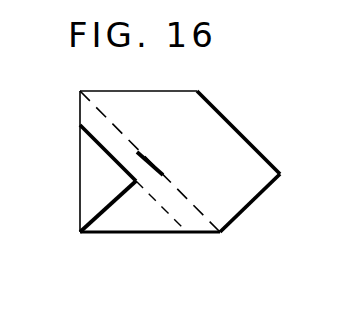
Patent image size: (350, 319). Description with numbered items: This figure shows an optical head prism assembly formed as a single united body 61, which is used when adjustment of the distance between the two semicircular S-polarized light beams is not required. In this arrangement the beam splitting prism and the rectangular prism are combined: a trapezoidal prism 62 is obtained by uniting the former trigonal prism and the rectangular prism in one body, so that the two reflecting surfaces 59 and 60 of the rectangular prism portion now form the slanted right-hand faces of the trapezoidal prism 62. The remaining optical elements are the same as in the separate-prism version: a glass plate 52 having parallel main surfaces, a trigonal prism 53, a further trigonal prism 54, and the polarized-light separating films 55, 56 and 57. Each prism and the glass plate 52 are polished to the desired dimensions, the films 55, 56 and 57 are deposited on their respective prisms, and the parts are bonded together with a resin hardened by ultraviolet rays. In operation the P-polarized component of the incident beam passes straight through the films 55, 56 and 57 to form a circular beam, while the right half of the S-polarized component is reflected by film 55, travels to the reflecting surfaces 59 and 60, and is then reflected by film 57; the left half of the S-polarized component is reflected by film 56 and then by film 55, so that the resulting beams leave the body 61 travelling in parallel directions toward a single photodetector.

The glass plate 52 is at (200, 226).
The trigonal prism 53 is at (95, 175).
The trigonal prism 54 is at (135, 218).
The polarized-light separating film 55 is at (154, 161).
The polarized-light separating film 56 is at (94, 141).
The polarized-light separating film 57 is at (90, 223).
The reflecting surface 59 is at (254, 148).
The reflecting surface 60 is at (263, 193).
The united body 61 is at (80, 91).
The trapezoidal prism 62 is at (233, 193).